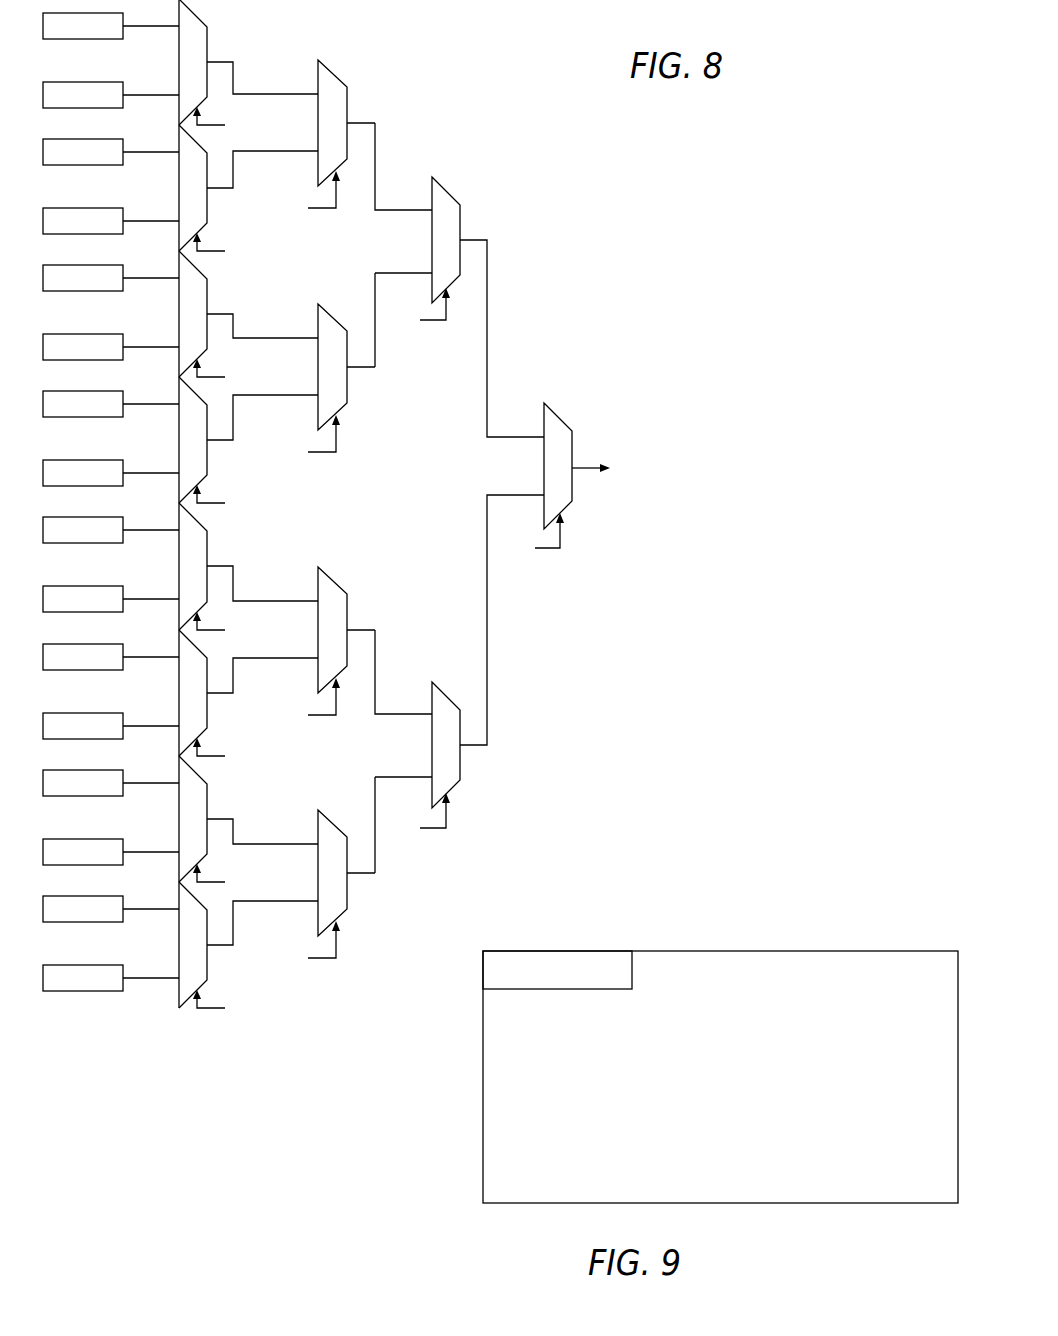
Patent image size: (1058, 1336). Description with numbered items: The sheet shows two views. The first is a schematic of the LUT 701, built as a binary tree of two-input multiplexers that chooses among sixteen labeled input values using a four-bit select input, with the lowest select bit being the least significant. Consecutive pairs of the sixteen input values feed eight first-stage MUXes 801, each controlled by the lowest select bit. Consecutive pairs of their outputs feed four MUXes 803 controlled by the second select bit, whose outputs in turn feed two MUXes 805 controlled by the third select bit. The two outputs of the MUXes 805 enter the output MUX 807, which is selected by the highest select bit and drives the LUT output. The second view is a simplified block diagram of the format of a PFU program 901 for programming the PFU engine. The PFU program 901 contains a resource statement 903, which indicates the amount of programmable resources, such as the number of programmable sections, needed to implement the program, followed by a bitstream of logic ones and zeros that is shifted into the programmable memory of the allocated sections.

In FIG. 8, the LUT 701 is at (563, 193).
In FIG. 8, the 2-input MUXes 801 is at (196, 1052).
In FIG. 8, the 2-input MUXes 803 is at (345, 1027).
In FIG. 8, the 2-input MUXes 805 is at (460, 213).
In FIG. 8, the output MUX 807 is at (567, 505).
In FIG. 9, the PFU program 901 is at (483, 1133).
In FIG. 9, the resource statement 903 is at (555, 951).